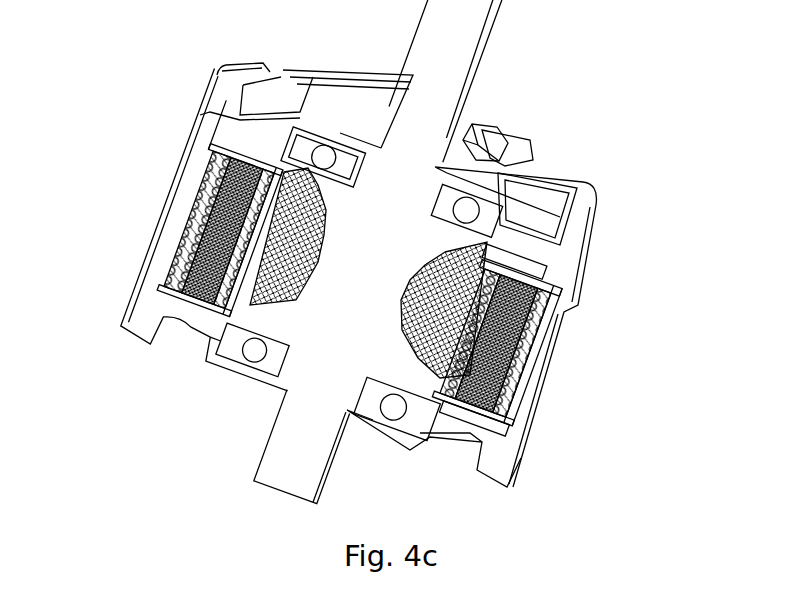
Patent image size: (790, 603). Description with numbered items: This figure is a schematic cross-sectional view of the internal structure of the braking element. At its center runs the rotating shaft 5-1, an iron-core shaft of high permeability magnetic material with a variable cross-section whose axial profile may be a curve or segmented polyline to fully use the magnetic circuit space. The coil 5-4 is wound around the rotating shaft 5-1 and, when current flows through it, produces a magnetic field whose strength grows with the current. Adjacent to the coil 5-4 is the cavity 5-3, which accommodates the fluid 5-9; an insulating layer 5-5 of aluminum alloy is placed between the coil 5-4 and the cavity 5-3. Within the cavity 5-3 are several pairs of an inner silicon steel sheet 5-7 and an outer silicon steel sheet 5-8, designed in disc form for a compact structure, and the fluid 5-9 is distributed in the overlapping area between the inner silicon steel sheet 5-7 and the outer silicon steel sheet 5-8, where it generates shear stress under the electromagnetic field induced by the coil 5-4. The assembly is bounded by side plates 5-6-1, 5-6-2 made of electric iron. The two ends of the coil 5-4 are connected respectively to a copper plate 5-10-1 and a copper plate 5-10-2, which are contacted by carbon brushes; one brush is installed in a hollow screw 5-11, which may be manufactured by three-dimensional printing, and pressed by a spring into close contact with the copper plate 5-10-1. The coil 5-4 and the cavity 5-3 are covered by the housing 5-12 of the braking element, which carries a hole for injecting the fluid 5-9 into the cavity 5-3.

The rotating shaft 5-1 is at (408, 76).
The cavity 5-3 is at (537, 292).
The coil 5-4 is at (258, 202).
The insulating layer 5-5 is at (240, 232).
The side plate 5-6-1 is at (177, 283).
The side plate 5-6-2 is at (222, 138).
The inner silicon steel sheet 5-7 is at (527, 318).
The outer silicon steel sheet 5-8 is at (517, 373).
The fluid 5-9 is at (530, 345).
The copper plate 5-10-1 is at (520, 256).
The copper plate 5-10-2 is at (480, 410).
The hollow screw 5-11 is at (490, 152).
The housing 5-12 is at (473, 128).